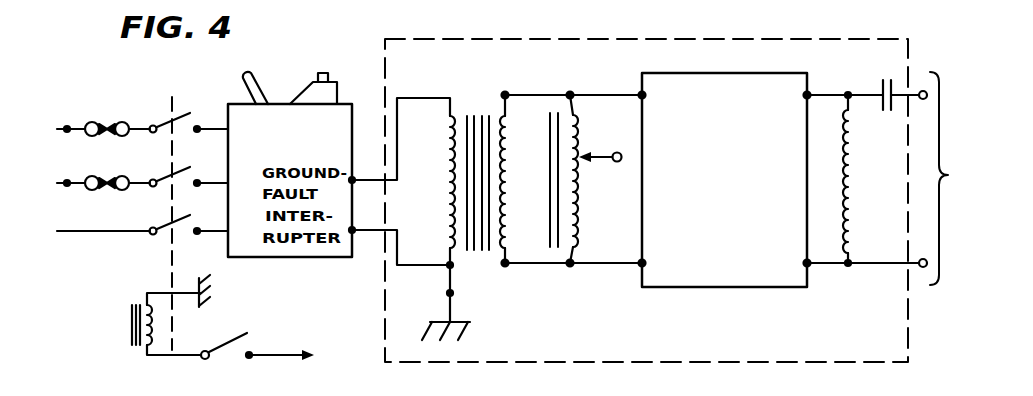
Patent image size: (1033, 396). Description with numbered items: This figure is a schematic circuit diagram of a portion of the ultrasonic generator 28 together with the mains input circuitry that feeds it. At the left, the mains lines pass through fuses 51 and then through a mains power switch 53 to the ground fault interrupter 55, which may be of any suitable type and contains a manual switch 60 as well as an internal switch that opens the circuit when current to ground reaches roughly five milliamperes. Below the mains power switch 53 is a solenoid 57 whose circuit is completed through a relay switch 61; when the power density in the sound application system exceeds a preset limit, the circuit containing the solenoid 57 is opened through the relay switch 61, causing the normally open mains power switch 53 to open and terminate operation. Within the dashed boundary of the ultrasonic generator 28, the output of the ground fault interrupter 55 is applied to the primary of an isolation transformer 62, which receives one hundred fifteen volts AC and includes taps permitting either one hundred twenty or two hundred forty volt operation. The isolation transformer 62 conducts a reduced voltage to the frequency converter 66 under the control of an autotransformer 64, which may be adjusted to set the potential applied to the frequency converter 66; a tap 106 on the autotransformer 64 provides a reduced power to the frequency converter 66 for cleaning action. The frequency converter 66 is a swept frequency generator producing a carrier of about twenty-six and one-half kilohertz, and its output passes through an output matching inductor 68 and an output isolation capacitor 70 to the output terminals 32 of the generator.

The ultrasonic generator 28 is at (553, 64).
The fuses 51 is at (93, 109).
The mains power switch 53 is at (188, 96).
The ground fault interrupter 55 is at (302, 70).
The solenoid 57 is at (137, 286).
The manual switch 60 is at (250, 72).
The relay switch 61 is at (234, 331).
The isolation transformer 62 is at (468, 80).
The autotransformer 64 is at (587, 102).
The tap 106 is at (599, 157).
The frequency converter 66 is at (730, 84).
The output matching inductor 68 is at (853, 84).
The output isolation capacitor 70 is at (896, 79).
The output terminals 32 is at (918, 178).